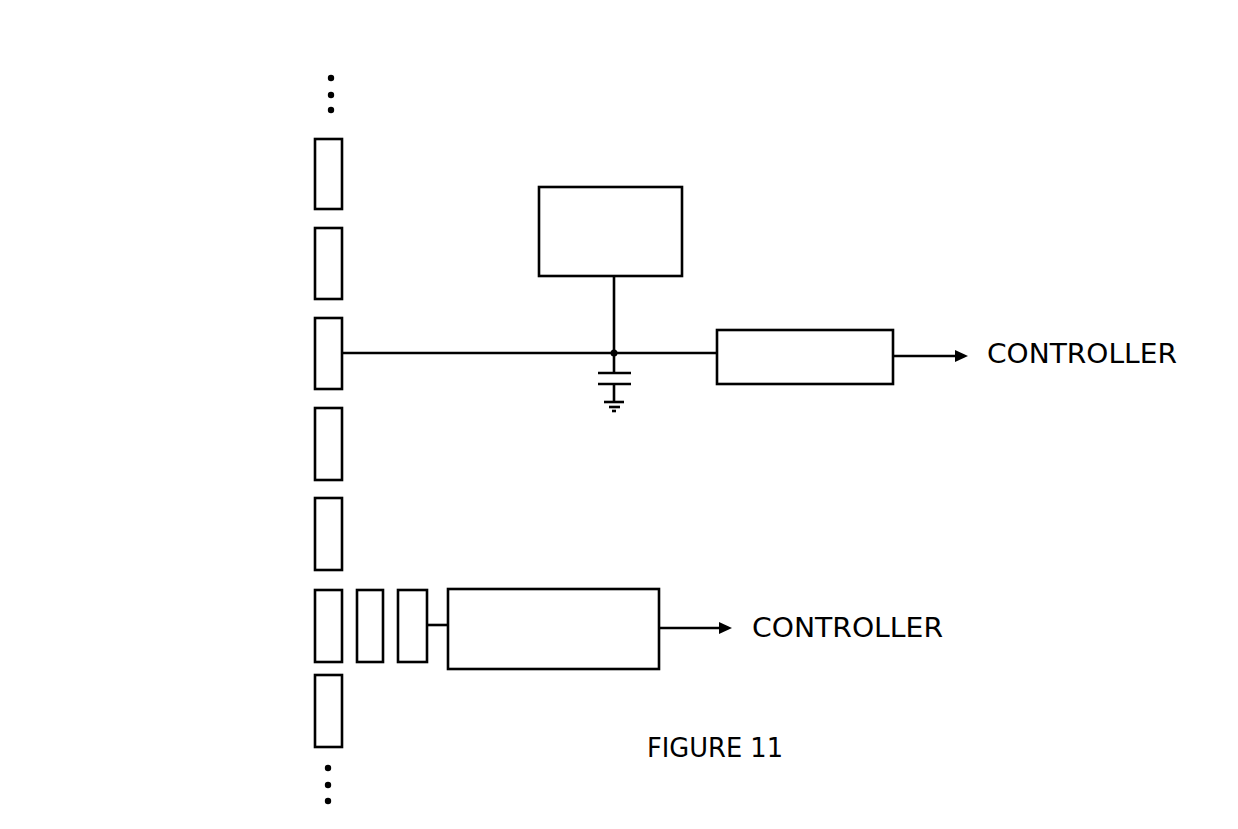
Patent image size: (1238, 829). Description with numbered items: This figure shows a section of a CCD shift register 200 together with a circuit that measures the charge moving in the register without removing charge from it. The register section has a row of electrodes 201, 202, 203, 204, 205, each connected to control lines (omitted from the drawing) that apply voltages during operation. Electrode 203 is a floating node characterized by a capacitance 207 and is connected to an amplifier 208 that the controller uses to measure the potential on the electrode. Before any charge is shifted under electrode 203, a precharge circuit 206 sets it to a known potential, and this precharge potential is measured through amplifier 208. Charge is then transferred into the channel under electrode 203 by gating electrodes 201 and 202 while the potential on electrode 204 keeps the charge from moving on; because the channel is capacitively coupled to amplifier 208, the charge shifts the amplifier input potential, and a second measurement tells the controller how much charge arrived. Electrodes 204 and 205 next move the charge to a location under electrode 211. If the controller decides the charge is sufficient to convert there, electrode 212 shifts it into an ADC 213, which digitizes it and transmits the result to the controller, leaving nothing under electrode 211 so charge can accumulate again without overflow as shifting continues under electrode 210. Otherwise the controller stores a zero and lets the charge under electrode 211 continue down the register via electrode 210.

The CCD shift register 200 is at (180, 159).
The electrode 201 is at (328, 174).
The electrode 202 is at (328, 260).
The electrode 203 is at (322, 359).
The electrode 204 is at (329, 443).
The electrode 205 is at (322, 528).
The precharge circuit 206 is at (608, 186).
The capacitance 207 is at (625, 385).
The amplifier 208 is at (815, 384).
The electrode 210 is at (317, 733).
The electrode 211 is at (330, 646).
The electrode 212 is at (368, 593).
The ADC 213 is at (500, 595).